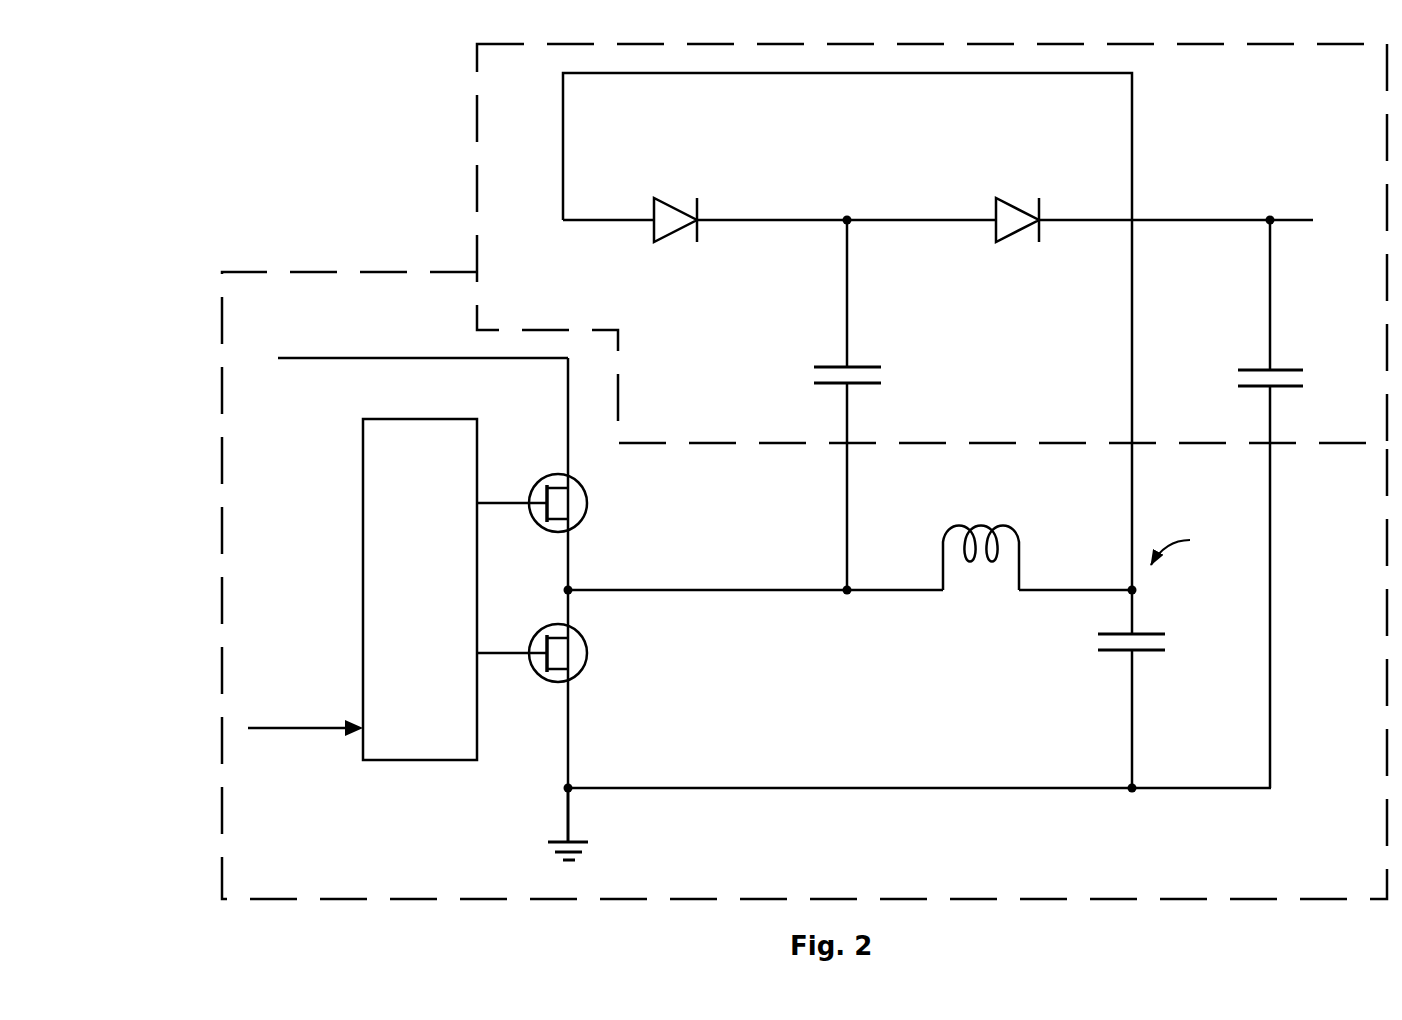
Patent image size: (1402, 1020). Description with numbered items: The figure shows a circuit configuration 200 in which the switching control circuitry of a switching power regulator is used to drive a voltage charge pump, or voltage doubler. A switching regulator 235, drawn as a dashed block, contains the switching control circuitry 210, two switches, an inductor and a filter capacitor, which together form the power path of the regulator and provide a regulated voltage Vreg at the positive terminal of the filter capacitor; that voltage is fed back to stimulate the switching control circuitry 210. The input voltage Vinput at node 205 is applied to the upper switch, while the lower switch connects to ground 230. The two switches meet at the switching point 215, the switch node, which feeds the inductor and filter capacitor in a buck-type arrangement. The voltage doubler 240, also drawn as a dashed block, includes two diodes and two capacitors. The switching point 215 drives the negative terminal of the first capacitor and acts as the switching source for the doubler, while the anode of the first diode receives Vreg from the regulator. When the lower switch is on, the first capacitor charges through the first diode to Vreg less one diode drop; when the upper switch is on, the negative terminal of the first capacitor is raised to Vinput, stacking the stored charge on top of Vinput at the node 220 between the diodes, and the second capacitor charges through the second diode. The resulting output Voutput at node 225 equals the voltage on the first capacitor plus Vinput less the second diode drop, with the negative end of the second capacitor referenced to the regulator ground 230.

The circuit configuration 200 is at (733, 471).
The input voltage node (Vinput) 205 is at (282, 360).
The switching control circuitry 210 is at (448, 772).
The switching point 215 is at (583, 575).
The intermediate node between D1 and D2 220 is at (869, 235).
The Voutput 225 is at (1280, 238).
The ground 230 is at (585, 818).
The switching regulator 235 is at (218, 575).
The voltage doubler 240 is at (475, 193).